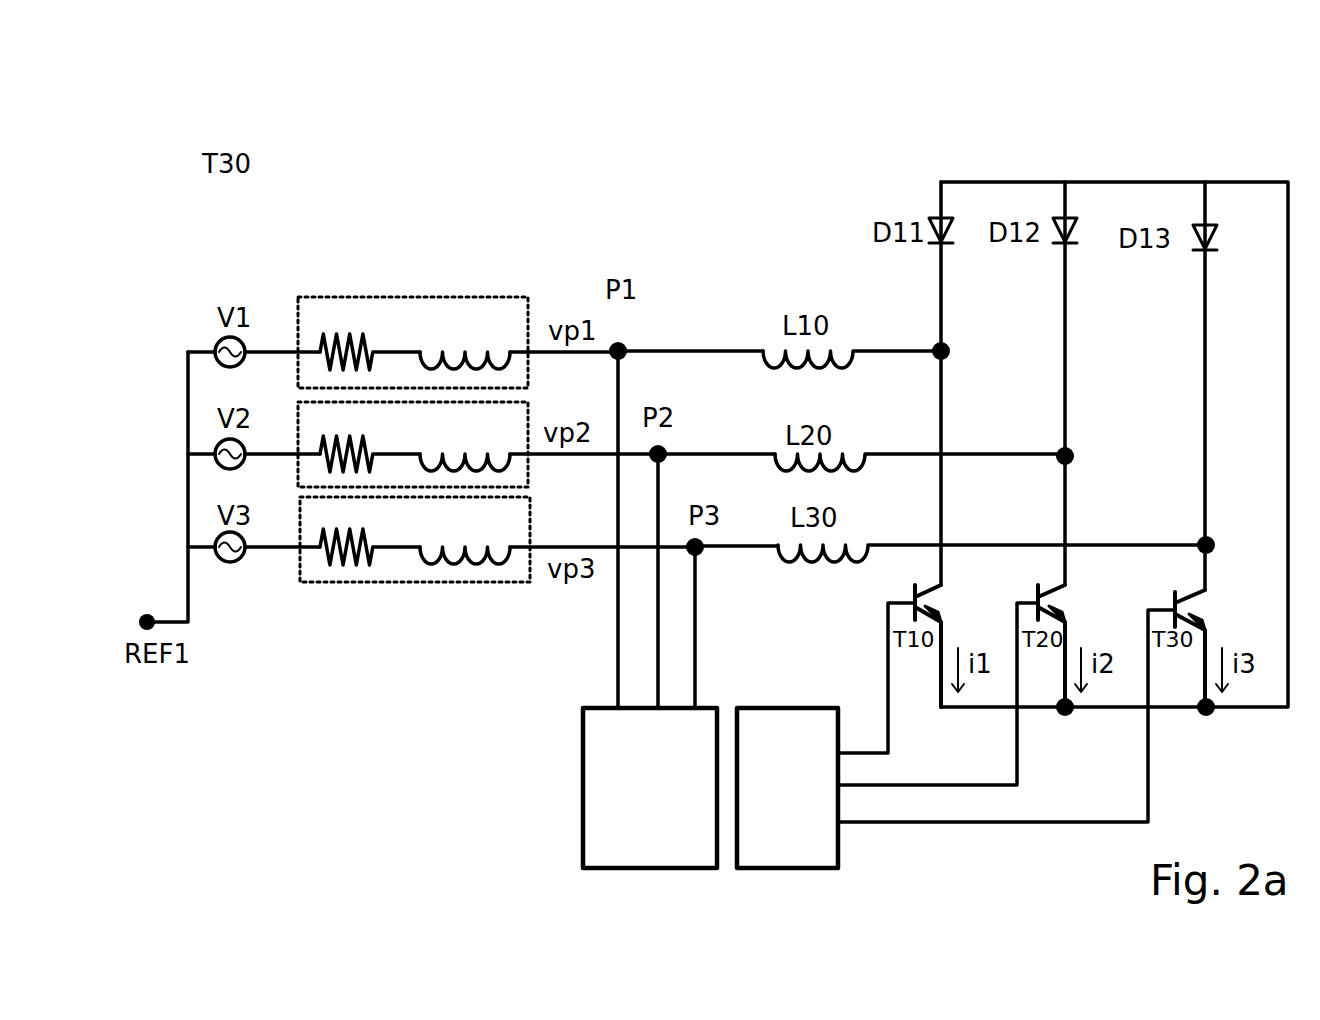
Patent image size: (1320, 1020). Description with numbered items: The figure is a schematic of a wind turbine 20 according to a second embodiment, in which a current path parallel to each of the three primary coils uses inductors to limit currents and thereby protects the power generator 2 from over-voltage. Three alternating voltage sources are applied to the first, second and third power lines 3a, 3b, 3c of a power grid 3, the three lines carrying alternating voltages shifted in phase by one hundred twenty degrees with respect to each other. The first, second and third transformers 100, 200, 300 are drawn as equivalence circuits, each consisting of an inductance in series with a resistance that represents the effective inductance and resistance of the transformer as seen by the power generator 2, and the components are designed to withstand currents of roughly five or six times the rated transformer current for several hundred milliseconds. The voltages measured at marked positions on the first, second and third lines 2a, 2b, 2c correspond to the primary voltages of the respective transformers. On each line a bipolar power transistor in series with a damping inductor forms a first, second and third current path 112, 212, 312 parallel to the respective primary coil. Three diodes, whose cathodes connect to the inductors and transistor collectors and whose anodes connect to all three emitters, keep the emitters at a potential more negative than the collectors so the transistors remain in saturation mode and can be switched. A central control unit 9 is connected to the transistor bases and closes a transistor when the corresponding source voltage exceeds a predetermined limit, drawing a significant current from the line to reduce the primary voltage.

The wind turbine 20 is at (852, 130).
The power generator 2 is at (583, 798).
The central control unit 9 is at (777, 708).
The power grid 3 is at (236, 600).
The first power line 3a is at (278, 346).
The second power line 3b is at (282, 462).
The third power line 3c is at (288, 547).
The first transformer 100 is at (412, 300).
The second transformer 200 is at (530, 468).
The third transformer 300 is at (377, 585).
The first line 2a is at (699, 350).
The second line 2b is at (734, 456).
The third line 2c is at (745, 544).
The first current path 112 is at (943, 378).
The second current path 212 is at (1067, 486).
The third current path 312 is at (1208, 570).